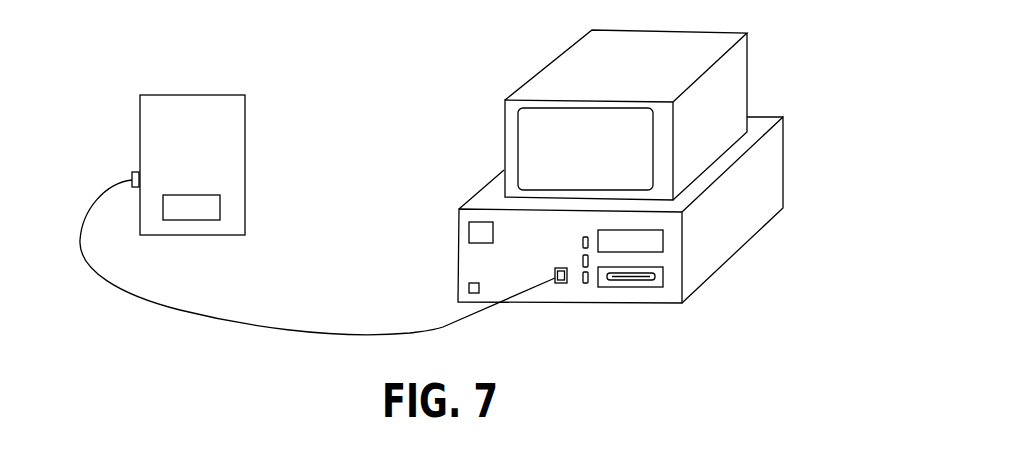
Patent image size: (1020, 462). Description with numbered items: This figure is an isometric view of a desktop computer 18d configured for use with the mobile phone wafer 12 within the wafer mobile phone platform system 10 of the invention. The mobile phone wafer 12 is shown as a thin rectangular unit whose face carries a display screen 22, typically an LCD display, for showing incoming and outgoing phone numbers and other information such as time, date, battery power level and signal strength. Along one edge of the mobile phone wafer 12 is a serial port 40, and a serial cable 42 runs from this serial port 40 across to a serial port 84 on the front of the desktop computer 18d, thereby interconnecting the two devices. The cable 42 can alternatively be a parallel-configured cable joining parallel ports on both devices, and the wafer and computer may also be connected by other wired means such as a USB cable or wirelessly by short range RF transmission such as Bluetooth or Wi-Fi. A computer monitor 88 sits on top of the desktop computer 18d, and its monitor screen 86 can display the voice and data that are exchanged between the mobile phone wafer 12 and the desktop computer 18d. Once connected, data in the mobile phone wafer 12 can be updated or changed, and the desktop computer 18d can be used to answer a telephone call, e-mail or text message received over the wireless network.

The wafer mobile phone platform system 10 is at (279, 116).
The mobile phone wafer 12 is at (182, 108).
The display screen 22 is at (207, 207).
The serial port 40 is at (138, 170).
The serial cable 42 is at (307, 330).
The desktop computer 18d is at (459, 191).
The serial port 84 is at (565, 283).
The monitor screen 86 is at (528, 135).
The computer monitor 88 is at (577, 57).